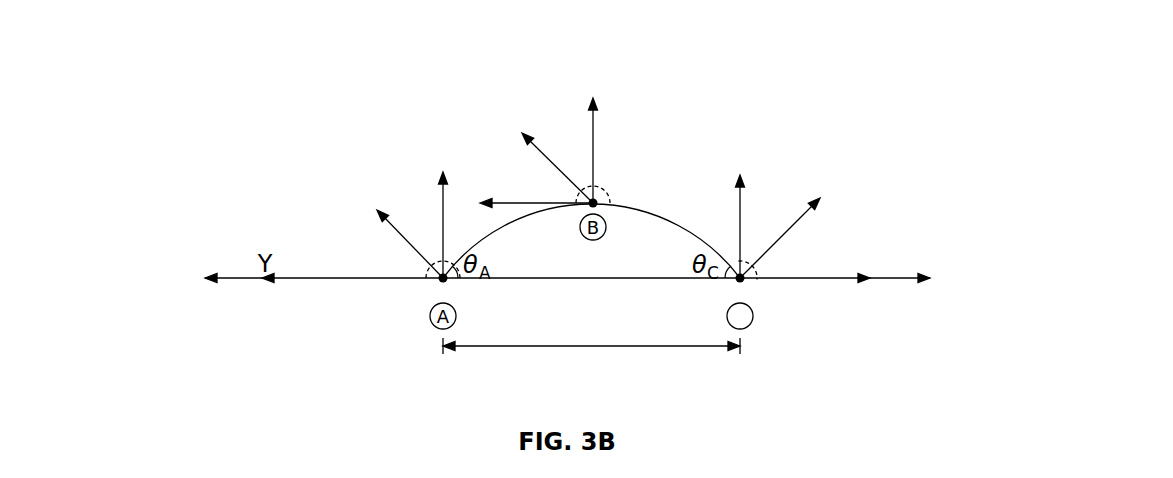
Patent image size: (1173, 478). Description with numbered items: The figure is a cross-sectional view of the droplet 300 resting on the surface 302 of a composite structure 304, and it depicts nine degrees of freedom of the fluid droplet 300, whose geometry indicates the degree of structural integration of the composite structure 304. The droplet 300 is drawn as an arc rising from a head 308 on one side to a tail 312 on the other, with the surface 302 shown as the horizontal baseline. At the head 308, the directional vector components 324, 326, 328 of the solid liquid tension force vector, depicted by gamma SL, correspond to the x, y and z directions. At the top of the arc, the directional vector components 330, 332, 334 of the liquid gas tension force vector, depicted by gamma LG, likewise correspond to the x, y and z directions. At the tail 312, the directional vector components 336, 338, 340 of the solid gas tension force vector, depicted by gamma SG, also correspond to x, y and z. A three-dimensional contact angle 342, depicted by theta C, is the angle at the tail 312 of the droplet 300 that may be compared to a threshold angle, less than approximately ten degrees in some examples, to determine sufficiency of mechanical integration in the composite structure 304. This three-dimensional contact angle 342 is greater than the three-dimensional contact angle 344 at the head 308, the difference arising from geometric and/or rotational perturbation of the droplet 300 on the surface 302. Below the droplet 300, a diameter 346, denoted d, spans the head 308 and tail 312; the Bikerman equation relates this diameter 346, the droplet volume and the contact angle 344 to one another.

The droplet 300 is at (644, 185).
The surface 302 is at (752, 268).
The composite structure 304 is at (757, 302).
The head 308 is at (436, 284).
The tail 312 is at (746, 284).
The directional vector component 324 is at (357, 174).
The directional vector component 326 is at (178, 262).
The directional vector component 328 is at (428, 134).
The directional vector component 330 is at (528, 106).
The directional vector component 332 is at (490, 164).
The directional vector component 334 is at (594, 70).
The directional vector component 336 is at (818, 170).
The directional vector component 338 is at (966, 266).
The directional vector component 340 is at (728, 148).
The three-dimensional contact angle 342 is at (727, 284).
The three-dimensional contact angle 344 is at (460, 285).
The diameter 346 is at (592, 349).